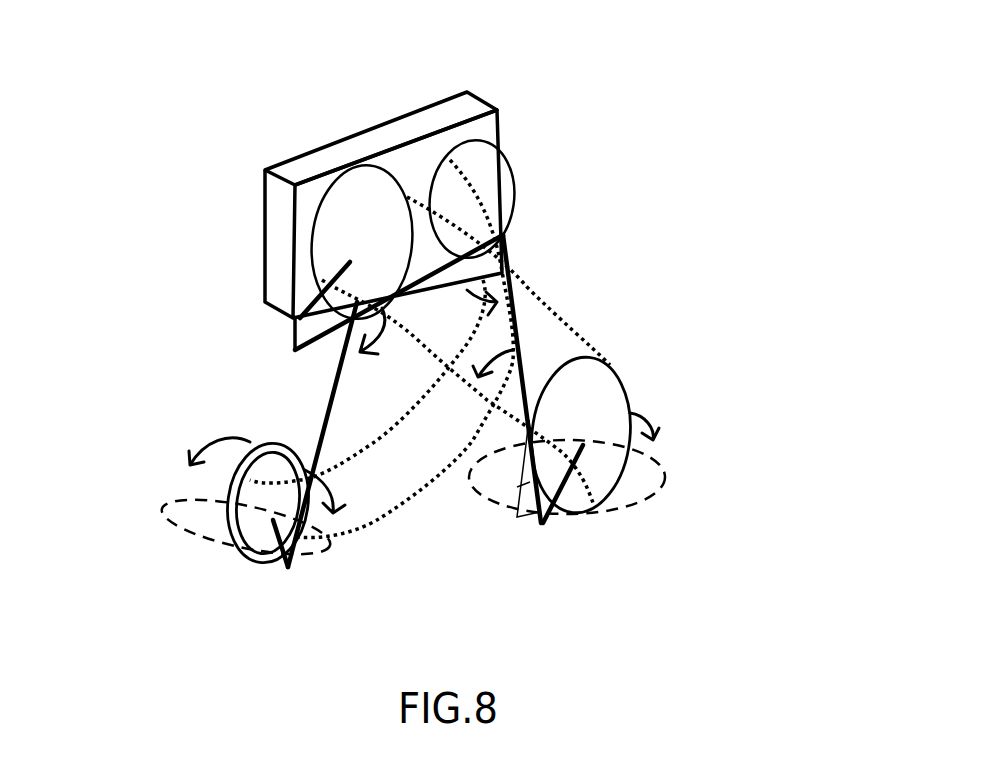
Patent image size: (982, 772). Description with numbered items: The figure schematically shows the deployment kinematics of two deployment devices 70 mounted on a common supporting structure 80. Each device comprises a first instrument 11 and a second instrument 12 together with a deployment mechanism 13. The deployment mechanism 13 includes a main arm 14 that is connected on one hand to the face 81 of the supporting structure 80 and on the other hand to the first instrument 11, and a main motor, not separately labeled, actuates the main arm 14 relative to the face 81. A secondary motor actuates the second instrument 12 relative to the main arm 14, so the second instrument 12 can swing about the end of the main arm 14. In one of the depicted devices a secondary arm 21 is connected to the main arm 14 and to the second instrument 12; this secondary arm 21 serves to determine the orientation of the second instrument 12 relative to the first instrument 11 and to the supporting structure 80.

The walking toy robot 70 is at (507, 17).
The supporting structure 80 is at (458, 117).
The face 81 is at (308, 208).
The deployment mechanism 13 is at (150, 262).
The main arm 14 is at (323, 420).
The second instrument 12 is at (313, 557).
The first instrument 11 is at (197, 540).
The secondary arm 21 is at (517, 520).